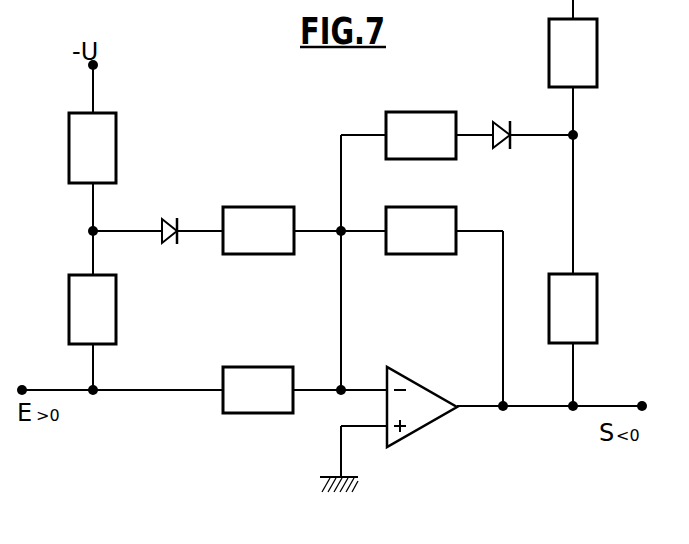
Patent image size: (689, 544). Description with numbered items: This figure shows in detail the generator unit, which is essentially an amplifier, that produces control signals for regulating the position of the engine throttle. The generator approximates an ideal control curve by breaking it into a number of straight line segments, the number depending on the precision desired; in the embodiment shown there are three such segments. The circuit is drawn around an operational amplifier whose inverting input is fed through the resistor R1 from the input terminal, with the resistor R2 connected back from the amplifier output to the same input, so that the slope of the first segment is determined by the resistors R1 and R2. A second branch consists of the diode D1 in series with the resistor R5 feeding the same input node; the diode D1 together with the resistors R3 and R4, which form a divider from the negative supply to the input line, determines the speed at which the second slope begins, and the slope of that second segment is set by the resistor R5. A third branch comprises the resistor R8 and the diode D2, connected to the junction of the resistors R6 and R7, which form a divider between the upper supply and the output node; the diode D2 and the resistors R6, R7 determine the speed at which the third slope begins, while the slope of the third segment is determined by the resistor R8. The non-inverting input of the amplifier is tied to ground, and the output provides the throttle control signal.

The resistor R1 is at (258, 390).
The resistor R2 is at (421, 230).
The resistor R3 is at (92, 148).
The resistor R4 is at (92, 309).
The resistor R5 is at (258, 230).
The resistor R6 is at (573, 53).
The resistor R7 is at (573, 308).
The resistor R8 is at (421, 135).
The diode D1 is at (169, 216).
The diode D2 is at (499, 122).